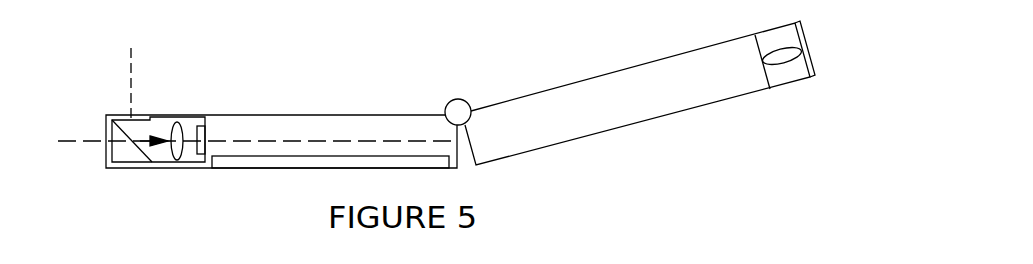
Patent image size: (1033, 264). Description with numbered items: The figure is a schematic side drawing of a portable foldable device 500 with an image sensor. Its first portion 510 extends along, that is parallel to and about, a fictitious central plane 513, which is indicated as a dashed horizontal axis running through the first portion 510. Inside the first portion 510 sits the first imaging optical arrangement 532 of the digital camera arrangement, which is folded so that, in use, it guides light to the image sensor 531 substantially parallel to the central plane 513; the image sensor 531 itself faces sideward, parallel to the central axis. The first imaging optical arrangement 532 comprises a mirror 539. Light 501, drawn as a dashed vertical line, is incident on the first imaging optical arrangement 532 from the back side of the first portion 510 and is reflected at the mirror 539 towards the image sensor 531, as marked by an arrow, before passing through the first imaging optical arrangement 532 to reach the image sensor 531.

The device 500 is at (360, 72).
The light 501 is at (131, 70).
The first portion 510 is at (246, 131).
The central plane 513 is at (82, 136).
The image sensor 531 is at (203, 134).
The first imaging optical arrangement 532 is at (167, 158).
The mirror 539 is at (141, 149).